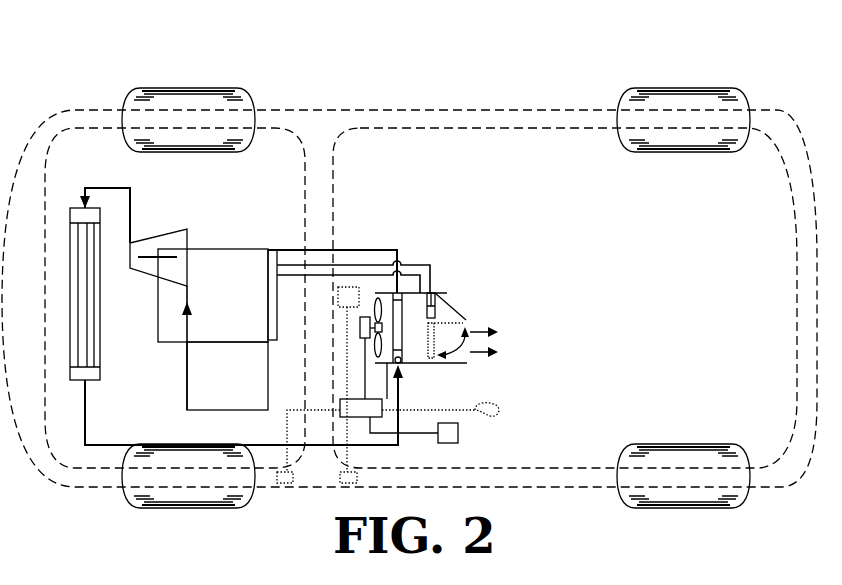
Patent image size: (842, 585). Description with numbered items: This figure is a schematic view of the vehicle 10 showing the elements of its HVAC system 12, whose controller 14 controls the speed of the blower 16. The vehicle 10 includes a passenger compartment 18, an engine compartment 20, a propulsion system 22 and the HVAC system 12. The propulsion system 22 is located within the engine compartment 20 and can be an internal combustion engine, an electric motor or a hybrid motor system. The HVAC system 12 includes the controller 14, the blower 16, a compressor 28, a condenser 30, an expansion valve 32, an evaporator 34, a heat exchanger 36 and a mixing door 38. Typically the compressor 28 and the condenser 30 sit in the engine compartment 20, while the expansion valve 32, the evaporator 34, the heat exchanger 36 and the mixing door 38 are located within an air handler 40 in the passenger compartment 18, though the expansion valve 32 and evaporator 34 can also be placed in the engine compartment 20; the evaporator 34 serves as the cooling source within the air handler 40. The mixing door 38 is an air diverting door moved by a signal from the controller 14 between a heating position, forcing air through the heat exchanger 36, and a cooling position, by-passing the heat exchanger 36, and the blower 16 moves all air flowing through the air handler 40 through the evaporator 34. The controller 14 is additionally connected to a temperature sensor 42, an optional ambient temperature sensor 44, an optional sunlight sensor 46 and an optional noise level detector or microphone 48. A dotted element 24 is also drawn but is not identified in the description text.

The vehicle 10 is at (212, 58).
The HVAC system 12 is at (470, 297).
The controller 14 is at (360, 413).
The blower 16 is at (358, 328).
The passenger compartment 18 is at (551, 106).
The engine compartment 20 is at (282, 96).
The propulsion system 22 is at (104, 160).
The sensor 24 is at (352, 288).
The compressor 28 is at (159, 247).
The condenser 30 is at (92, 343).
The expansion valve 32 is at (403, 363).
The evaporator 34 is at (404, 302).
The heat exchanger 36 is at (440, 298).
The mixing door 38 is at (437, 338).
The air handler 40 is at (465, 363).
The temperature sensor 42 is at (448, 433).
The ambient temperature sensor 44 is at (350, 483).
The sunlight sensor 46 is at (283, 483).
The noise level detector or microphone 48 is at (495, 417).